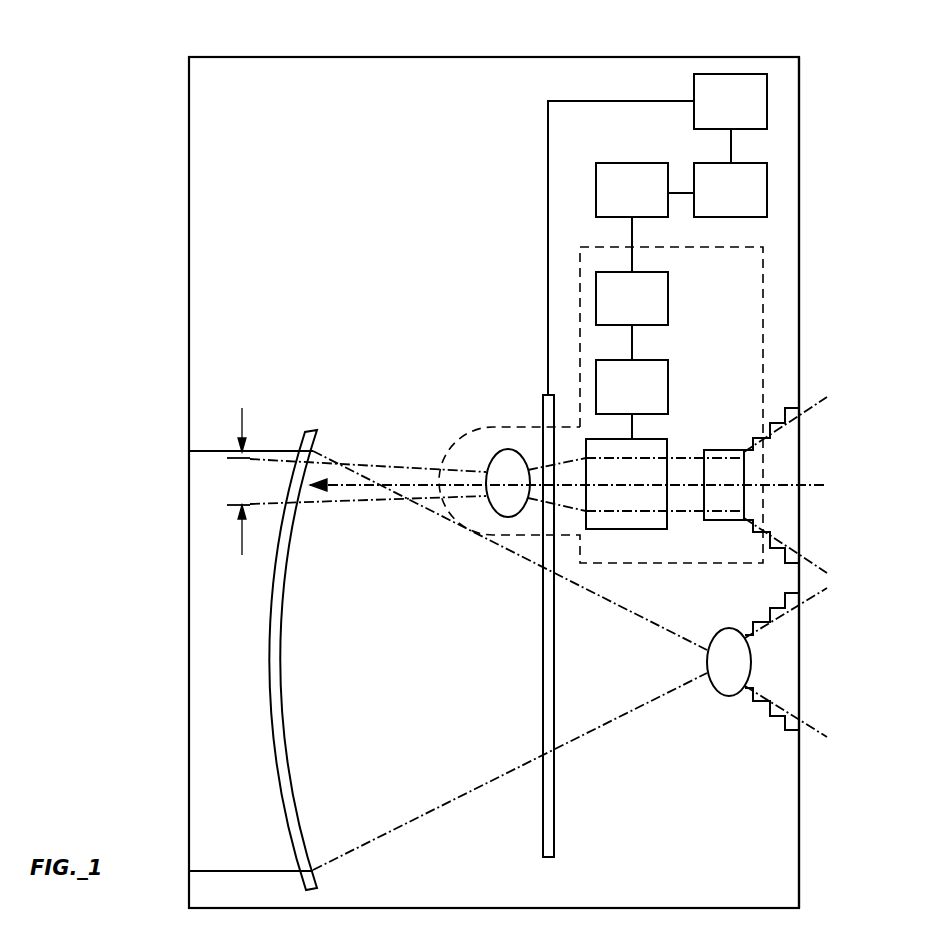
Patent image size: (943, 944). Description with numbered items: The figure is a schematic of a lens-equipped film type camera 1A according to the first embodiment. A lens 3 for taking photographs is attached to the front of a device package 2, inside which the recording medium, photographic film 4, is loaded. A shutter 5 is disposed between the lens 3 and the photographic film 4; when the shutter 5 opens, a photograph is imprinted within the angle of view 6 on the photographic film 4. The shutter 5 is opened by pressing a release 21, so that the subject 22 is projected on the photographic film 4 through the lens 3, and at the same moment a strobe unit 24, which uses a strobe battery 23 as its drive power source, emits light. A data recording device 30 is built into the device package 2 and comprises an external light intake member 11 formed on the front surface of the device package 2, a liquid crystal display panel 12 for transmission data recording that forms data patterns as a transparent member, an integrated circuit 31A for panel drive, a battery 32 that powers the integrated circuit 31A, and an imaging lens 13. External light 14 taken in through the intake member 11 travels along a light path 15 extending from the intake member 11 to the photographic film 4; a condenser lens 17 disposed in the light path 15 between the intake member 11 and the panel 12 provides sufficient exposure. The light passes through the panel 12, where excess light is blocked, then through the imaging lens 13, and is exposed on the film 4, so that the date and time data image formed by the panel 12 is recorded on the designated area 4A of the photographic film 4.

The lens-equipped film type camera 1A is at (297, 36).
The device package 2 is at (799, 158).
The lens for taking photographs 3 is at (726, 640).
The photographic film 4 is at (292, 736).
The designated area 4A is at (242, 481).
The shutter 5 is at (549, 812).
The angle of view 6 is at (215, 867).
The external light intake member 11 is at (787, 468).
The liquid crystal display panel 12 is at (625, 512).
The imaging lens 13 is at (505, 460).
The external light 14 is at (827, 395).
The light path 15 is at (420, 480).
The condenser lens 17 is at (736, 466).
The release 21 is at (718, 114).
The subject 22 is at (827, 588).
The strobe battery 23 is at (619, 203).
The strobe unit 24 is at (718, 203).
The data recording device 30 is at (763, 335).
The integrated circuit for panel drive 31A is at (612, 400).
The battery 32 is at (619, 311).